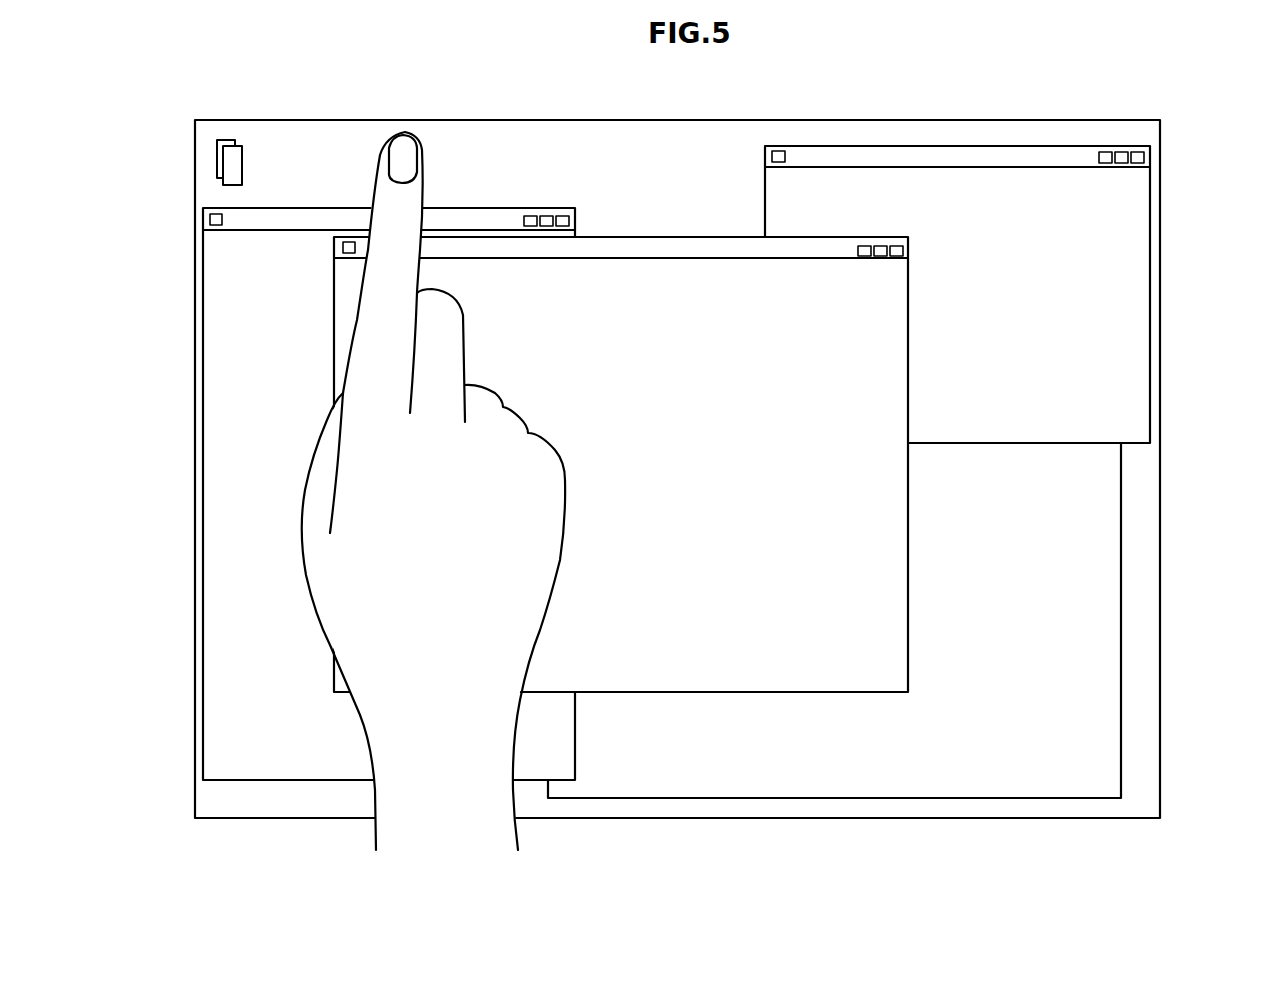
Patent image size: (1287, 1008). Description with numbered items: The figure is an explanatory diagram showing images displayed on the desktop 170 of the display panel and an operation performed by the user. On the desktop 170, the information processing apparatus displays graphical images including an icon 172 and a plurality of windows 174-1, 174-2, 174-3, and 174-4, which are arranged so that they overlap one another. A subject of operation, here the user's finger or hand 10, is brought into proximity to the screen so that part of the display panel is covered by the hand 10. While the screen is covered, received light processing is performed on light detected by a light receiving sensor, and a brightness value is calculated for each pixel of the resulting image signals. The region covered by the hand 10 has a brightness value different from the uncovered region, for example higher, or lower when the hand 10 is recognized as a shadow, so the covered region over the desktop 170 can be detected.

The finger or hand 10 is at (333, 657).
The desktop 170 is at (545, 120).
The icon 172 is at (228, 140).
The window 174-1 is at (660, 237).
The window 174-2 is at (478, 208).
The window 174-3 is at (956, 146).
The window 174-4 is at (1121, 562).